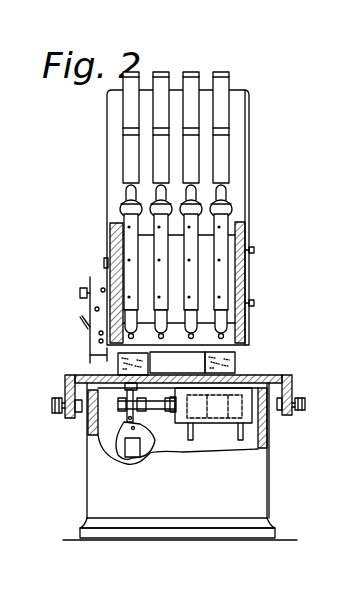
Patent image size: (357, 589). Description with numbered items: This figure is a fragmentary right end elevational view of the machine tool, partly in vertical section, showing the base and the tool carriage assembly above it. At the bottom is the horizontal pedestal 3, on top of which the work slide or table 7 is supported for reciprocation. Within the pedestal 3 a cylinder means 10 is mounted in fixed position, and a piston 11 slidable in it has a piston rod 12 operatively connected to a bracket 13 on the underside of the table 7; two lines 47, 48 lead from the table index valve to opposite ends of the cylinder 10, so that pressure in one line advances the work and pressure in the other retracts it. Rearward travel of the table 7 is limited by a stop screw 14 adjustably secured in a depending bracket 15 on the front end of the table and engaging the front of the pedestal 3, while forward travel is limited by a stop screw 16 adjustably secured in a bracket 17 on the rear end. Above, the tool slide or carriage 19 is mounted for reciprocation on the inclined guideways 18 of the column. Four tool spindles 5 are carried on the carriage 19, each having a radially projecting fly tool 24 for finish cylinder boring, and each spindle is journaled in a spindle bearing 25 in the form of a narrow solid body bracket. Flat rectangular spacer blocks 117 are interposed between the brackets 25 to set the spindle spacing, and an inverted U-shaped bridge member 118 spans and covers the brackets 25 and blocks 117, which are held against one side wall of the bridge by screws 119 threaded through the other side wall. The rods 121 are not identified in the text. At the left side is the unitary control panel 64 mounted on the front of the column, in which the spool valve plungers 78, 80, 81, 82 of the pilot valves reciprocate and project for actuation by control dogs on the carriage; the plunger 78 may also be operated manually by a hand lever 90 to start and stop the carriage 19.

The rods 121 is at (228, 114).
The tool slide or carriage 19 is at (255, 196).
The spacer blocks 117 is at (243, 236).
The screws 119 is at (255, 249).
The spindle bearings 25 is at (255, 250).
The bridge member 118 is at (243, 294).
The tool spindles 5 is at (255, 303).
The spool valve plunger 80 is at (107, 277).
The spool valve plunger 82 is at (102, 288).
The spool valve plunger 78 is at (95, 309).
The hand lever 90 is at (84, 325).
The spool valve plunger 81 is at (99, 334).
The control panel 64 is at (92, 347).
The guideways 18 is at (150, 362).
The fly tool 24 is at (220, 338).
The work slide or table 7 is at (269, 375).
The depending bracket 15 is at (65, 390).
The bracket 17 is at (293, 389).
The stop screw 14 is at (62, 413).
The stop screw 16 is at (297, 407).
The bracket 13 is at (126, 387).
The piston rod 12 is at (145, 407).
The cylinder means 10 is at (180, 420).
The piston 11 is at (203, 420).
The line 47 is at (185, 448).
The line 48 is at (237, 441).
The pedestal 3 is at (258, 475).